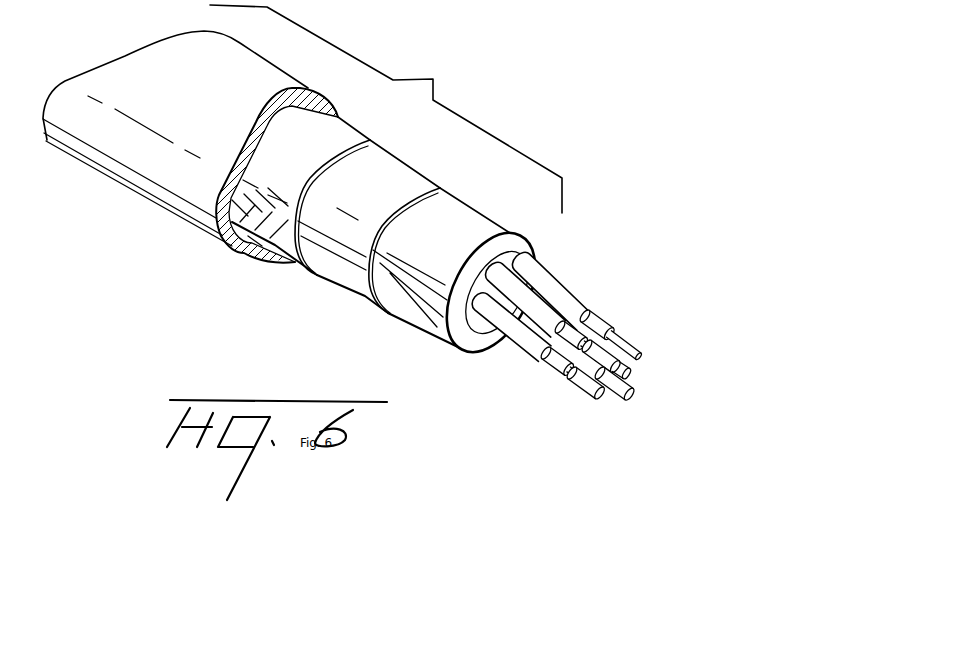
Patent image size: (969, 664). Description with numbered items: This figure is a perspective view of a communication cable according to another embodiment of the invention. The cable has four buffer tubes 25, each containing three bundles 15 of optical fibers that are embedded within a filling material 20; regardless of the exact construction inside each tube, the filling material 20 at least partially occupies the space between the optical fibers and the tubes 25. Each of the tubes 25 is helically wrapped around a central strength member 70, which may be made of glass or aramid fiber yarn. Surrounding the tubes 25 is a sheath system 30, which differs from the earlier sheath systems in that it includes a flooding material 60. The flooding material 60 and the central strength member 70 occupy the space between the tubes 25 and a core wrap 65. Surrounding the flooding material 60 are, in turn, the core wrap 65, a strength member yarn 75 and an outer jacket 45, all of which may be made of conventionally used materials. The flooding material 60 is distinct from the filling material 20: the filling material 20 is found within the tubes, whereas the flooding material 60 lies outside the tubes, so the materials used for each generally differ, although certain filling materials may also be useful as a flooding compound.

The bundles of optical fibers 15 is at (643, 353).
The filling material 20 is at (607, 319).
The tubes 25 is at (543, 292).
The sheath system 30 is at (386, 109).
The jacket 45 is at (160, 206).
The flooding material 60 is at (420, 323).
The core wrap 65 is at (338, 288).
The central strength member 70 is at (632, 374).
The strength member yarn 75 is at (276, 249).